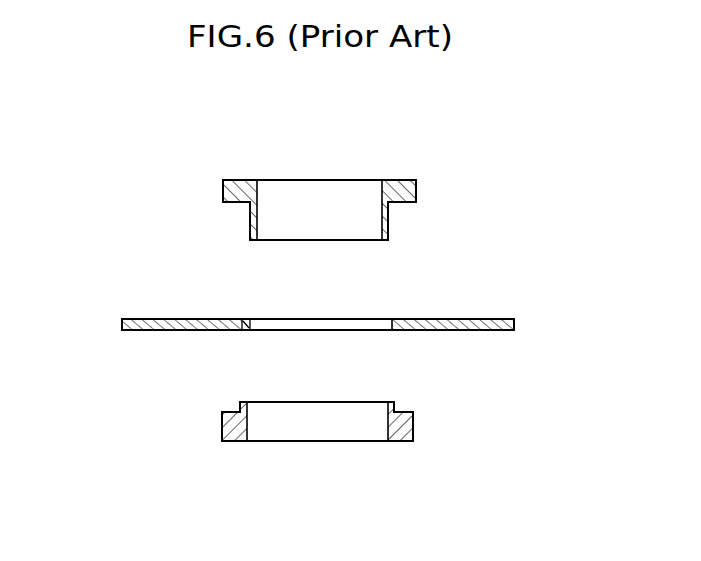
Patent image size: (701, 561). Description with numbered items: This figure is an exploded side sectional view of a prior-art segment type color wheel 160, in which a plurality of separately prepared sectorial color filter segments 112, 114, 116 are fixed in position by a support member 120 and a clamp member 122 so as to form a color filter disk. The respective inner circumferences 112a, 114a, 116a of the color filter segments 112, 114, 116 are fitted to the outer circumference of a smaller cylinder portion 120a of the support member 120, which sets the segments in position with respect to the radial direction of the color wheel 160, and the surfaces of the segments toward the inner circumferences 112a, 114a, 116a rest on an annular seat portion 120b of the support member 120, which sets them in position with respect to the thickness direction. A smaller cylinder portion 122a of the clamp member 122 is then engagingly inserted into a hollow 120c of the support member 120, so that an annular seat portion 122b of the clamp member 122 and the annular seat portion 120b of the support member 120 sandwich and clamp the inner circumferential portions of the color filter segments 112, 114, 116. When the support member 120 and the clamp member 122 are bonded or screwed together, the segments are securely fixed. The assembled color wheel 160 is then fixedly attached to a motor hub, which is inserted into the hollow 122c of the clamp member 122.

The segment type color wheel 160 is at (472, 188).
The clamp member 122 is at (350, 178).
The smaller cylinder portion of the clamp member 122a is at (250, 227).
The annular seat portion of the clamp member 122b is at (247, 207).
The hollow of the clamp member 122c is at (262, 190).
The color filter segment 112 is at (142, 319).
The inner circumference of color filter segment 112a is at (257, 323).
The color filter segment 114 is at (350, 320).
The inner circumference of color filter segment 114a is at (298, 319).
The color filter segment 116 is at (507, 320).
The inner circumference of color filter segment 116a is at (386, 325).
The support member 120 is at (342, 443).
The smaller cylinder portion of the support member 120a is at (397, 408).
The annular seat portion of the support member 120b is at (403, 413).
The hollow of the support member 120c is at (250, 410).